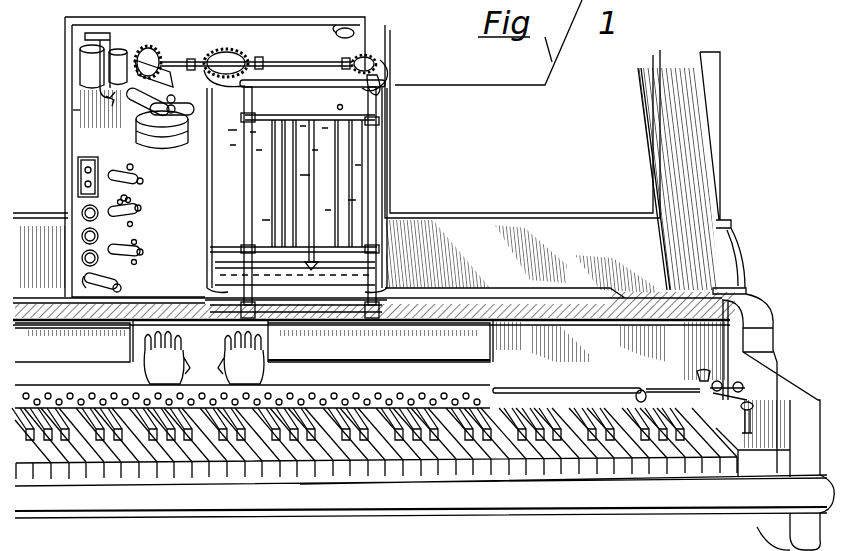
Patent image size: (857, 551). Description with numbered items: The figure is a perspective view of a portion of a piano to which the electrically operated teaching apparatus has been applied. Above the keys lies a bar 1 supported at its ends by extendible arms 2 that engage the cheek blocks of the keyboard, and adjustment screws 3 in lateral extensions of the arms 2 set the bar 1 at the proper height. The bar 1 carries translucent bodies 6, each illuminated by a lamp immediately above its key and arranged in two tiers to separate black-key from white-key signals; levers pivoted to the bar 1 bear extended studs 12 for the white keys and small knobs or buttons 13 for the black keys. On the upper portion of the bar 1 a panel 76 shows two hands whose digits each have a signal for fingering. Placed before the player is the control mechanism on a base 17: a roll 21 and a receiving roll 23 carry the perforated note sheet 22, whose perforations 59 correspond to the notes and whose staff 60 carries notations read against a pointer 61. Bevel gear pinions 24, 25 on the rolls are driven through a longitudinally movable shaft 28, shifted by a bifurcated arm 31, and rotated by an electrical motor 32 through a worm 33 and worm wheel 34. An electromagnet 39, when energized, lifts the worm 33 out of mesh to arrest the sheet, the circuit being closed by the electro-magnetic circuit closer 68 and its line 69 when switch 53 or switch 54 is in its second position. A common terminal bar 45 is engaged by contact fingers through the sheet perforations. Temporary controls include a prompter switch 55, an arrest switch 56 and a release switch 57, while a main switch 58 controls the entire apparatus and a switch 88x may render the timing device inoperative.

The bar 1 is at (485, 362).
The extendible arms 2 is at (538, 389).
The adjustment screws 3 is at (700, 395).
The translucent bodies 6 is at (367, 396).
The extended studs 12 is at (200, 418).
The knobs or buttons 13 is at (258, 427).
The base 17 is at (151, 211).
The roll 21 is at (388, 88).
The note sheet 22 is at (293, 179).
The receiving roll 23 is at (211, 224).
The bevel gear pinion 24 is at (378, 58).
The bevel gear pinion 25 is at (212, 52).
The shaft 28 is at (278, 57).
The bifurcated arm 31 is at (356, 35).
The electrical motor 32 is at (169, 137).
The worm 33 is at (157, 51).
The worm wheel 34 is at (159, 71).
The electromagnet 39 is at (72, 112).
The common terminal bar 45 is at (322, 183).
The switch 53 is at (137, 212).
The switch 54 is at (141, 252).
The prompter switch 55 is at (81, 210).
The arrest switch 56 is at (81, 234).
The temporary switch 57 is at (81, 257).
The main switch 58 is at (80, 178).
The perforations 59 is at (244, 208).
The staff 60 is at (206, 272).
The pointer 61 is at (316, 258).
The electro-magnetic switch or circuit closer 68 is at (82, 55).
The line 69 is at (78, 95).
The panel 76 is at (204, 357).
The switch 88x is at (118, 283).